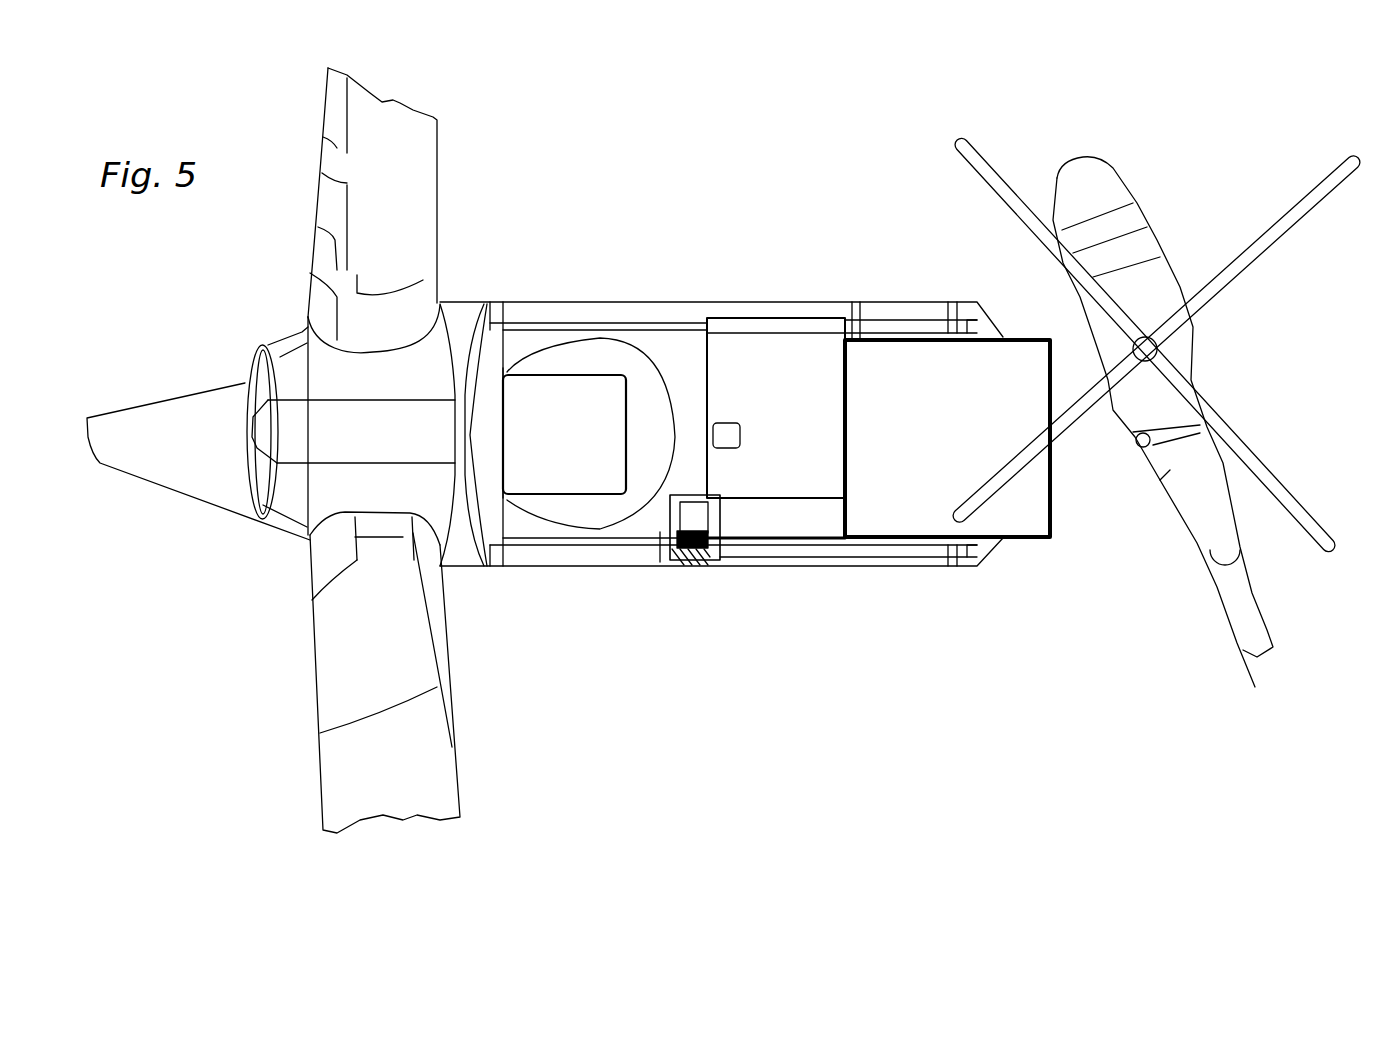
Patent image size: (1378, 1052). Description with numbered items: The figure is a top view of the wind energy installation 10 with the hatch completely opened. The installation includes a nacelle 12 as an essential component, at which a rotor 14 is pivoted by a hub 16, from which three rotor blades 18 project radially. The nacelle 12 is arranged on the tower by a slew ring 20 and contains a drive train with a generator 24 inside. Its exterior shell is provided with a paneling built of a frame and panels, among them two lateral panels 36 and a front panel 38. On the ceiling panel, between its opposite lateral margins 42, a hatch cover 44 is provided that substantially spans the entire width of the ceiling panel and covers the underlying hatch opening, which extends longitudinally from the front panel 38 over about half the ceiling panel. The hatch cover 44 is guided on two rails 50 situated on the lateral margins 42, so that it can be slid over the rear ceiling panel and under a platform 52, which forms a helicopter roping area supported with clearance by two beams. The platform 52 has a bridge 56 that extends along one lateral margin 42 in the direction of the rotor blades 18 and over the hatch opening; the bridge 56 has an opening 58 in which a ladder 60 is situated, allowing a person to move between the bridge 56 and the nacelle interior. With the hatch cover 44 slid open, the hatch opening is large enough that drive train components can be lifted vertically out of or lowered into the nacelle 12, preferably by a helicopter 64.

The wind energy installation 10 is at (916, 740).
The nacelle 12 is at (995, 603).
The rotor 14 is at (323, 762).
The hub 16 is at (283, 376).
The rotor blades 18 is at (425, 170).
The slew ring 20 is at (637, 363).
The generator 24 is at (585, 393).
The lateral panels 36 is at (743, 302).
The front panel 38 is at (455, 563).
The lateral margins 42 is at (568, 302).
The hatch cover 44 is at (798, 373).
The rails 50 is at (627, 313).
The platform 52 is at (918, 363).
The bridge 56 is at (820, 520).
The opening 58 is at (657, 570).
The ladder 60 is at (697, 570).
The helicopter 64 is at (1193, 350).